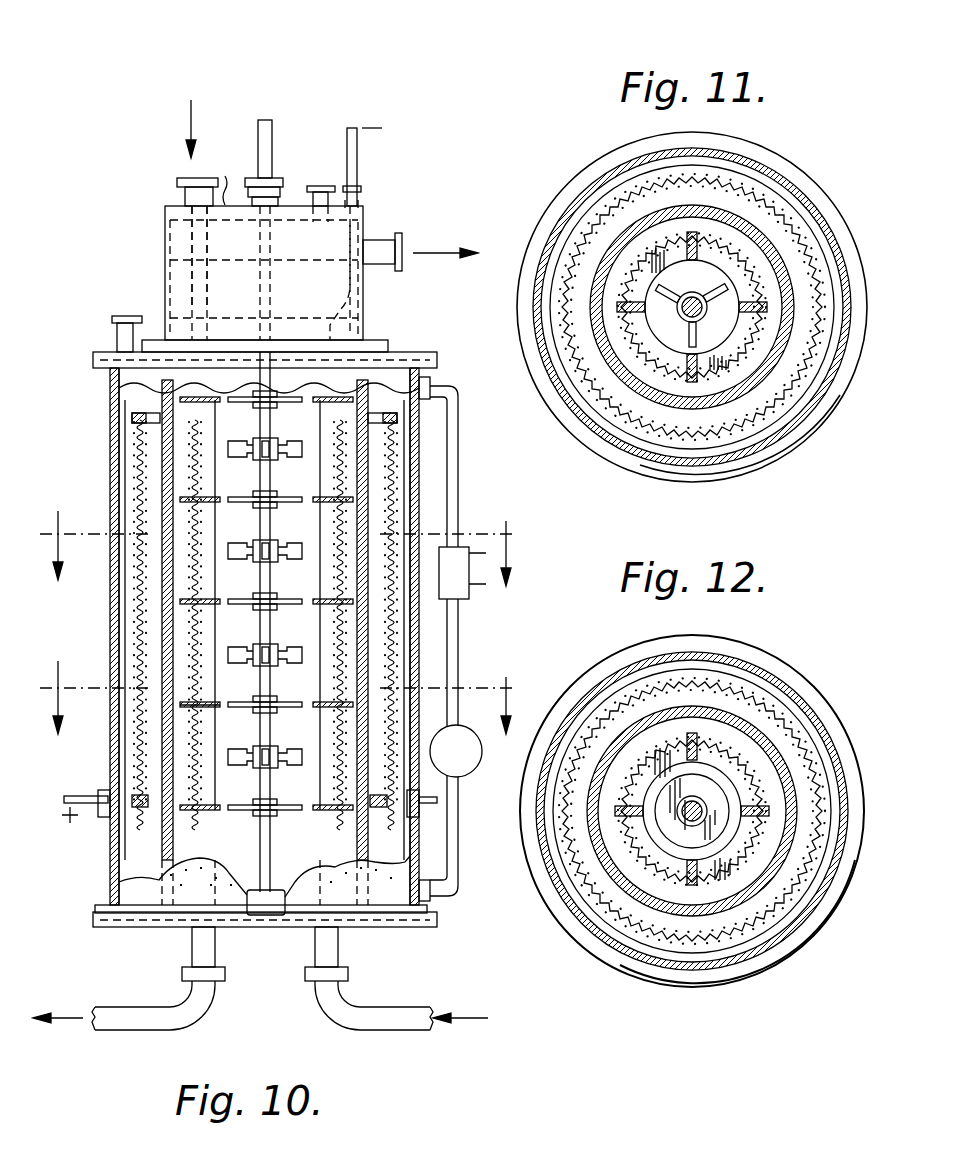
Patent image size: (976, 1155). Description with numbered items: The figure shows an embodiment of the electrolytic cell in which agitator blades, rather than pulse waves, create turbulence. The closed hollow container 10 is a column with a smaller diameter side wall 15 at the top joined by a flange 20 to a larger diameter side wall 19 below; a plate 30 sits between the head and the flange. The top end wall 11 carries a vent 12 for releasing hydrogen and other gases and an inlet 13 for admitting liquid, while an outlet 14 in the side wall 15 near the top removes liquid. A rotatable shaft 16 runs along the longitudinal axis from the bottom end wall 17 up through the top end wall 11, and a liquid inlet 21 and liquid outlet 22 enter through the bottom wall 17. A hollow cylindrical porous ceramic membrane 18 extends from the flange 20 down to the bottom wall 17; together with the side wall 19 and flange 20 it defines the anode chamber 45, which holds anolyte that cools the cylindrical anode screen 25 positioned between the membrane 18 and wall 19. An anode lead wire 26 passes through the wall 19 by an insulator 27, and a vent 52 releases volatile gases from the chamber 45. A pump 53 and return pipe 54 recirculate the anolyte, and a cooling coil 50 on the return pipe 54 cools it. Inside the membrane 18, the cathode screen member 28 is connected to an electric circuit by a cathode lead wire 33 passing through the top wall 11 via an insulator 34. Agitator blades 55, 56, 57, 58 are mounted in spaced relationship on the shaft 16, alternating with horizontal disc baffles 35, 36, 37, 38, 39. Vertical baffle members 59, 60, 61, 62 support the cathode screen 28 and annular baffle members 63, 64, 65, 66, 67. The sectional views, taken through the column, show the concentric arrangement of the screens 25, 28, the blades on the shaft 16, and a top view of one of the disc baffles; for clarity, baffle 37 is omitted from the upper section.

In FIG. 10, the closed hollow container 10 is at (95, 256).
In FIG. 11, the closed hollow container 10 is at (840, 175).
In FIG. 12, the closed hollow container 10 is at (860, 722).
In FIG. 10, the top end wall 11 is at (288, 364).
In FIG. 10, the vent 12 is at (310, 188).
In FIG. 10, the inlet 13 is at (182, 192).
In FIG. 10, the outlet 14 is at (397, 245).
In FIG. 10, the smaller diameter side wall 15 is at (165, 282).
In FIG. 10, the rotatable shaft 16 is at (262, 120).
In FIG. 11, the rotatable shaft 16 is at (693, 300).
In FIG. 12, the rotatable shaft 16 is at (690, 815).
In FIG. 10, the bottom end wall 17 is at (288, 922).
In FIG. 10, the porous ceramic membrane 18 is at (362, 510).
In FIG. 11, the porous ceramic membrane 18 is at (763, 240).
In FIG. 12, the porous ceramic membrane 18 is at (764, 740).
In FIG. 10, the larger diameter side wall 19 is at (414, 440).
In FIG. 11, the larger diameter side wall 19 is at (606, 182).
In FIG. 12, the larger diameter side wall 19 is at (630, 668).
In FIG. 10, the flange 20 is at (420, 352).
In FIG. 10, the liquid inlet 21 is at (338, 944).
In FIG. 10, the liquid outlet 22 is at (192, 940).
In FIG. 10, the cylindrical anode screen 25 is at (265, 625).
In FIG. 11, the cylindrical anode screen 25 is at (752, 195).
In FIG. 12, the cylindrical anode screen 25 is at (770, 710).
In FIG. 10, the anode lead wire 26 is at (65, 797).
In FIG. 10, the insulator 27 is at (95, 790).
In FIG. 10, the cathode screen member 28 is at (340, 620).
In FIG. 11, the cathode screen member 28 is at (756, 284).
In FIG. 12, the cathode screen member 28 is at (760, 823).
In FIG. 10, the mounting plate 30 is at (380, 342).
In FIG. 10, the cathode lead wire 33 is at (357, 155).
In FIG. 10, the insulator 34 is at (364, 208).
In FIG. 10, the baffle plate 35 is at (278, 403).
In FIG. 10, the baffle plate 36 is at (282, 499).
In FIG. 10, the baffle plate 37 is at (282, 602).
In FIG. 10, the baffle plate 38 is at (274, 704).
In FIG. 12, the baffle plate 38 is at (650, 861).
In FIG. 10, the baffle plate 39 is at (248, 815).
In FIG. 10, the anode chamber 45 is at (395, 648).
In FIG. 11, the anode chamber 45 is at (805, 403).
In FIG. 12, the anode chamber 45 is at (795, 912).
In FIG. 10, the cooling coil 50 is at (486, 584).
In FIG. 10, the vent 52 is at (105, 329).
In FIG. 10, the pump 53 is at (471, 752).
In FIG. 10, the return pipe 54 is at (454, 410).
In FIG. 10, the agitator blade 55 is at (233, 448).
In FIG. 10, the agitator blade 56 is at (235, 553).
In FIG. 11, the agitator blade 56 is at (710, 308).
In FIG. 10, the agitator blade 57 is at (233, 648).
In FIG. 10, the agitator blade 58 is at (255, 746).
In FIG. 10, the vertical baffle member 59 is at (195, 422).
In FIG. 11, the vertical baffle member 59 is at (628, 307).
In FIG. 12, the vertical baffle member 59 is at (640, 813).
In FIG. 11, the vertical baffle member 60 is at (690, 232).
In FIG. 12, the vertical baffle member 60 is at (698, 740).
In FIG. 10, the vertical baffle member 61 is at (340, 470).
In FIG. 11, the vertical baffle member 61 is at (752, 310).
In FIG. 12, the vertical baffle member 61 is at (743, 779).
In FIG. 11, the vertical baffle member 62 is at (680, 390).
In FIG. 12, the vertical baffle member 62 is at (700, 890).
In FIG. 10, the annular baffle member 63 is at (140, 410).
In FIG. 10, the annular baffle member 64 is at (200, 502).
In FIG. 10, the annular baffle member 65 is at (200, 608).
In FIG. 11, the annular baffle member 65 is at (717, 377).
In FIG. 10, the annular baffle member 66 is at (200, 708).
In FIG. 12, the annular baffle member 66 is at (688, 882).
In FIG. 10, the annular baffle member 67 is at (205, 820).